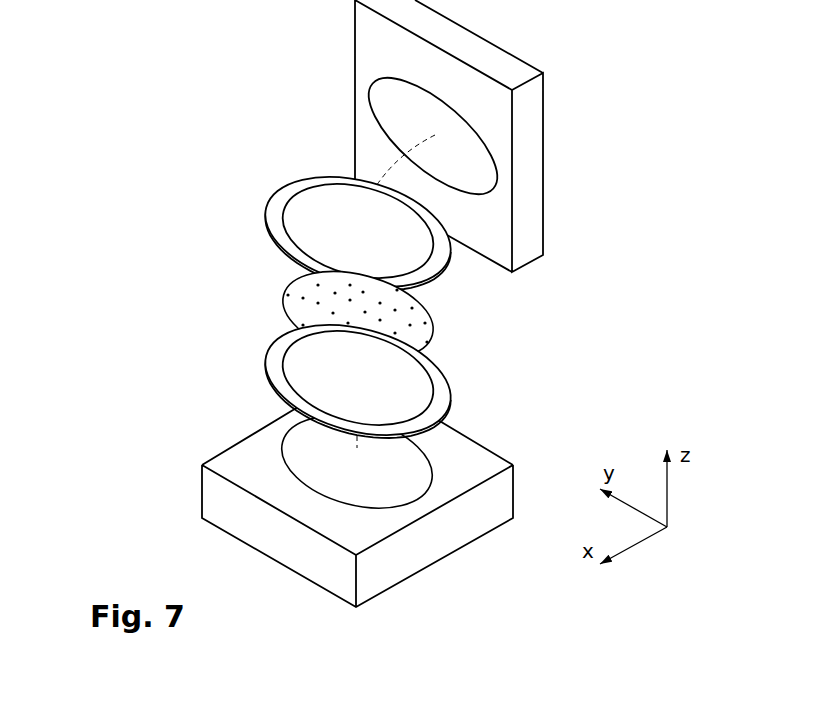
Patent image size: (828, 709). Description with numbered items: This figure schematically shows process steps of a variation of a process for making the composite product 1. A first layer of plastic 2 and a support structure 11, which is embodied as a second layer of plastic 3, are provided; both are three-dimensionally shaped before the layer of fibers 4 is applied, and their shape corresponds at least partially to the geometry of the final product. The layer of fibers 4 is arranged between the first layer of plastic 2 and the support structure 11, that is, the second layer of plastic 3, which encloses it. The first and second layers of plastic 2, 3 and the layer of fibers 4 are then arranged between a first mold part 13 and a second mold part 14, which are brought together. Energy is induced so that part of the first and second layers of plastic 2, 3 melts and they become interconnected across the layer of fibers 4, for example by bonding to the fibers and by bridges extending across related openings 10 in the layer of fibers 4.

The composite product 1 is at (175, 215).
The first layer of plastic 2 is at (280, 187).
The second layer of plastic 3 is at (287, 385).
The layer of fibers 4 is at (240, 293).
The openings 10 is at (318, 285).
The support structure 11 is at (238, 380).
The first mold part 13 is at (572, 133).
The second mold part 14 is at (230, 501).